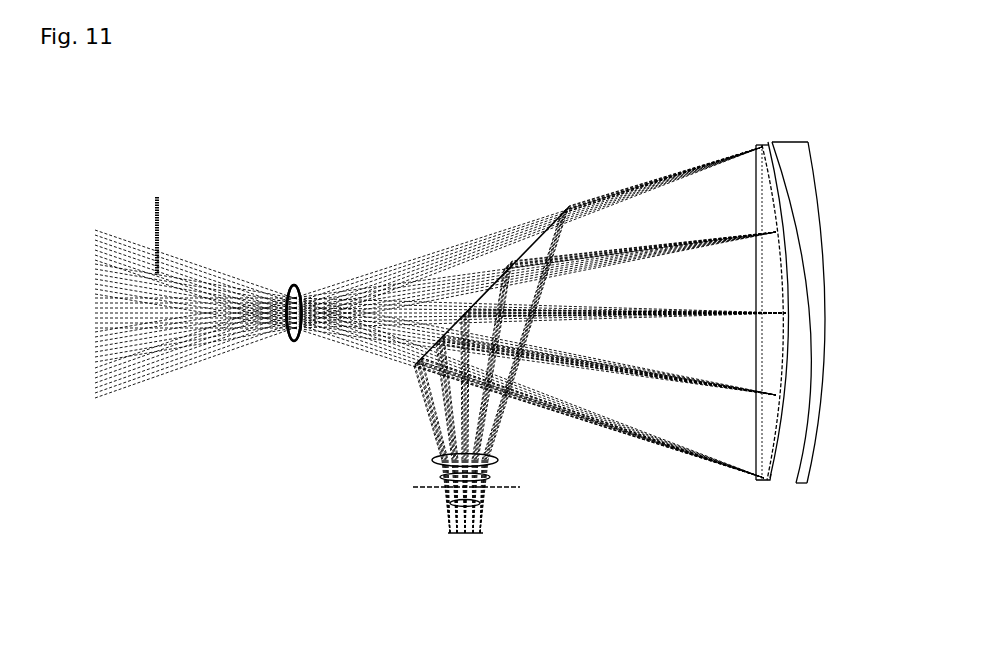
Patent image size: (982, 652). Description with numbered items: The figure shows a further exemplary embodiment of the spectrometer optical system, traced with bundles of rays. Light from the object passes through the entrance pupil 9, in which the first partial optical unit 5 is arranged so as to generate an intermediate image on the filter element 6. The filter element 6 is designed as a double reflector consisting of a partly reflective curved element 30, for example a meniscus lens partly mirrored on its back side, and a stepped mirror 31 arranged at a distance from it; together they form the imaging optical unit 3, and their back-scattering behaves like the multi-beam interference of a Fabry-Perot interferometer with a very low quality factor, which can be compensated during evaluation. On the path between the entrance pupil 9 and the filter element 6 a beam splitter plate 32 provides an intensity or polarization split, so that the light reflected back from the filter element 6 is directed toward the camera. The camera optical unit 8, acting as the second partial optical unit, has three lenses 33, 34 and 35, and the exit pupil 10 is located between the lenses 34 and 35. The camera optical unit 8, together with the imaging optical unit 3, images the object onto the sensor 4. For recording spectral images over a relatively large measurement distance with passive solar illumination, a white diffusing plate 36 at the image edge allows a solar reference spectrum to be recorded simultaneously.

The imaging optical unit 3 is at (769, 136).
The sensor 4 is at (478, 536).
The first partial optical unit 5 is at (295, 342).
The filter element 6 is at (794, 136).
The camera optical unit 8 is at (472, 491).
The entrance pupil 9 is at (298, 293).
The exit pupil 10 is at (513, 488).
The partly reflective curved element 30 is at (768, 482).
The stepped mirror 31 is at (800, 486).
The beam splitter plate 32 is at (565, 210).
The first lens 33 is at (497, 460).
The second lens 34 is at (490, 476).
The third lens 35 is at (452, 506).
The white diffusing plate 36 is at (160, 221).